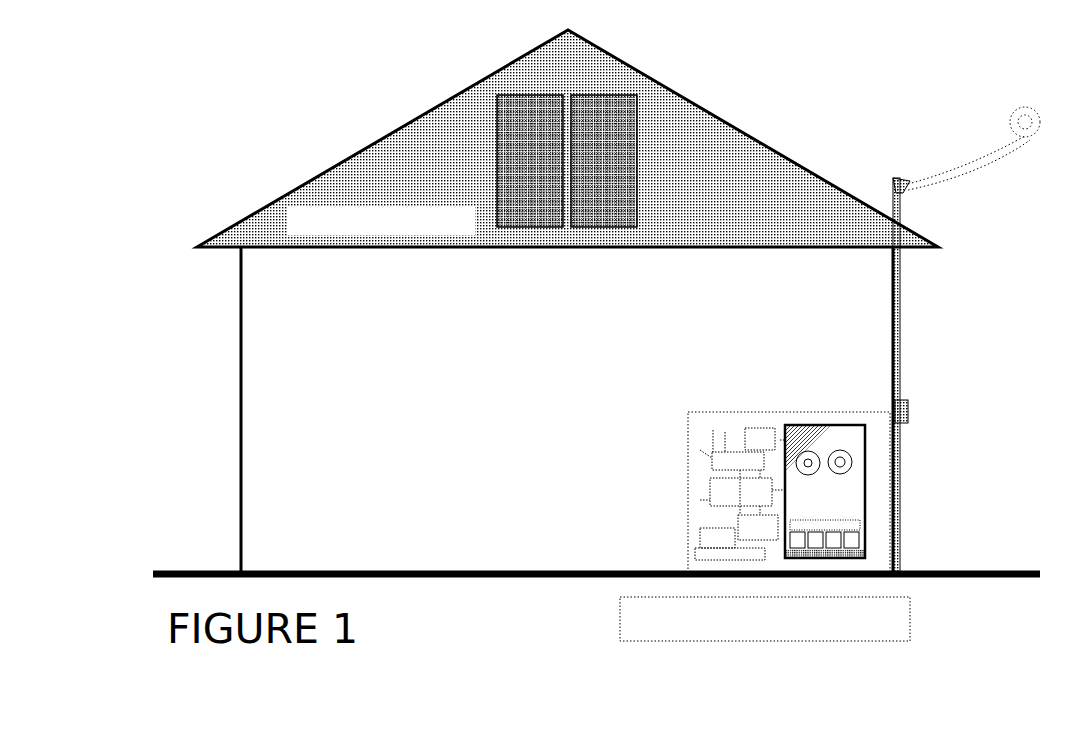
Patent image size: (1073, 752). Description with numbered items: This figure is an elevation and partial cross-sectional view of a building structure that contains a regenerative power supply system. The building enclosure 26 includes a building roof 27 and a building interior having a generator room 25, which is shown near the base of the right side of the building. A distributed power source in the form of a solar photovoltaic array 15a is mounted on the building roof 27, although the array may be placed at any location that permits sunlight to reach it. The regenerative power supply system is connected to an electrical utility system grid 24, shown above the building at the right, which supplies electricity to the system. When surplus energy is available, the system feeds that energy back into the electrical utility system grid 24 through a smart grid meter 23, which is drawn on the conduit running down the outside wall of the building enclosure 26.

The solar photovoltaic array 15a is at (647, 160).
The smart grid meter 23 is at (915, 411).
The electrical utility system grid 24 is at (1003, 122).
The generator room 25 is at (918, 620).
The building enclosure 26 is at (362, 352).
The building roof 27 is at (278, 212).